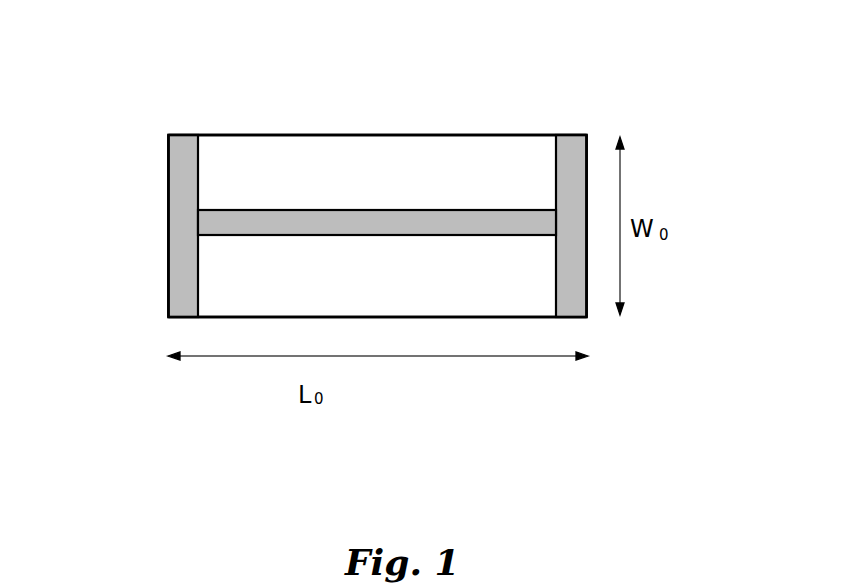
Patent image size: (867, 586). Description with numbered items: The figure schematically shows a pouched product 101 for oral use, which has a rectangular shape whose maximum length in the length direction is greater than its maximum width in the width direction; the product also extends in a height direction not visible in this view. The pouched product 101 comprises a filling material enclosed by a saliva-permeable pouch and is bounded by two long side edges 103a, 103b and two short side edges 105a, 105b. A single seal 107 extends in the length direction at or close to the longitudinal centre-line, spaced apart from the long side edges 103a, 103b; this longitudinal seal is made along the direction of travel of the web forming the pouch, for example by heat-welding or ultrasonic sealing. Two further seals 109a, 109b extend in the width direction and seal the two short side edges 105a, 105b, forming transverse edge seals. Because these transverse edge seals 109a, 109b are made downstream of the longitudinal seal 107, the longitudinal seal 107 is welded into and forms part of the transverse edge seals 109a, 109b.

The pouched product 101 is at (176, 81).
The long side edge 103a is at (407, 313).
The long side edge 103b is at (305, 137).
The short side edge 105a is at (167, 272).
The short side edge 105b is at (586, 268).
The seal 107 is at (307, 222).
The seal 109a is at (185, 164).
The seal 109b is at (570, 194).